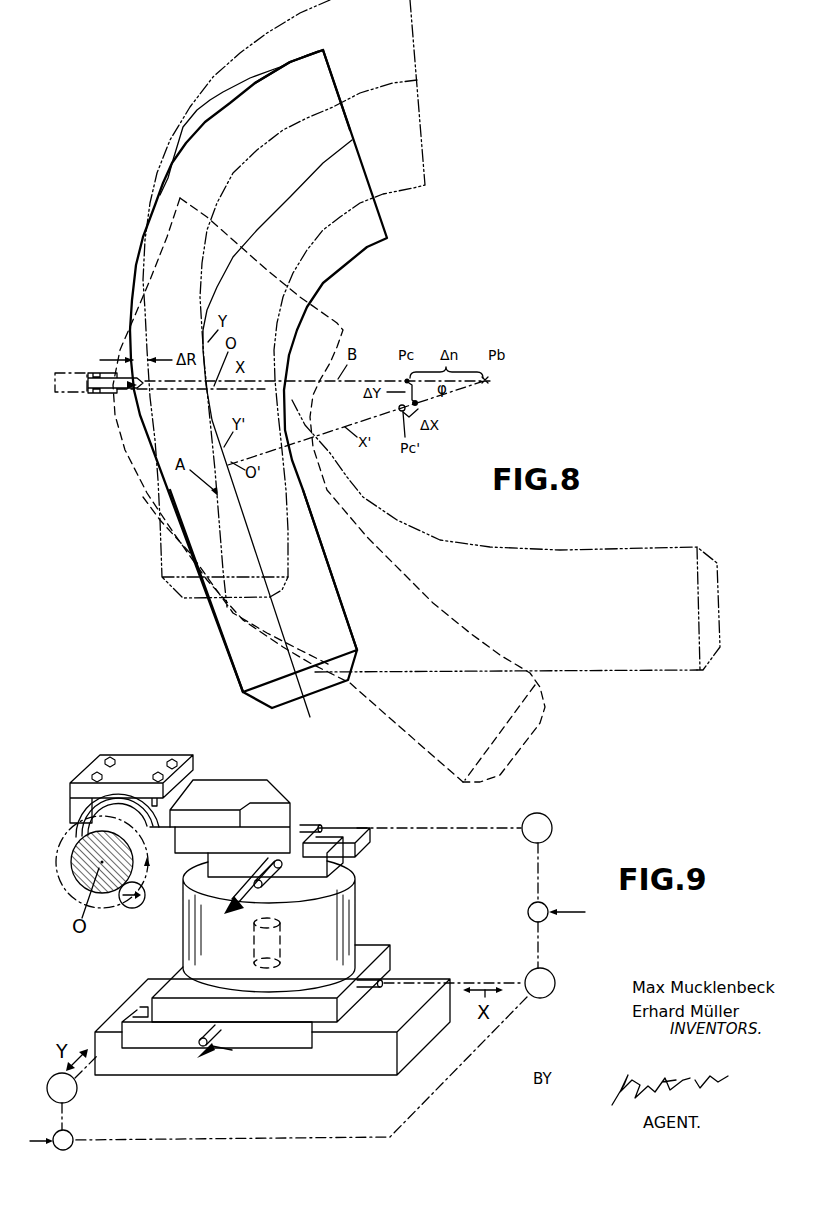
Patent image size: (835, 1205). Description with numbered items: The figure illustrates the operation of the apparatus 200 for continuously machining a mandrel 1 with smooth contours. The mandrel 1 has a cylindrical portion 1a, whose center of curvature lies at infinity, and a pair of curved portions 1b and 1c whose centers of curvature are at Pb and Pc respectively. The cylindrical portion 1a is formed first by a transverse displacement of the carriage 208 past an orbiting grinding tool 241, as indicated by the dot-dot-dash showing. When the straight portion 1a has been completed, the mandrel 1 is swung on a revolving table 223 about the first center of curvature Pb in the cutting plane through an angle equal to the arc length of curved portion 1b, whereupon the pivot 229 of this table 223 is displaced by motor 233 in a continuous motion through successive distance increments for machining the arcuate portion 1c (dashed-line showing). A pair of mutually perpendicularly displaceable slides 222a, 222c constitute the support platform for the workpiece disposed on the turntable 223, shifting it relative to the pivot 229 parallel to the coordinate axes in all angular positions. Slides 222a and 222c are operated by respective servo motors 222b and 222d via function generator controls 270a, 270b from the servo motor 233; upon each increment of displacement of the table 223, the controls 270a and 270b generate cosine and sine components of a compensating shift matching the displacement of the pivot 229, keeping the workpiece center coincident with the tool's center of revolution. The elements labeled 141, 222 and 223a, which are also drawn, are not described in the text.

In FIG. 8, the mandrel 1 is at (368, 252).
In FIG. 9, the mandrel 1 is at (69, 866).
In FIG. 8, the cylindrical portion 1a is at (234, 663).
In FIG. 8, the curved portion 1b is at (204, 112).
In FIG. 8, the curved portion 1c is at (303, 63).
In FIG. 8, the probe 141 is at (117, 393).
In FIG. 9, the apparatus 200 is at (251, 770).
In FIG. 9, the orbiting grinding tool 241 is at (130, 908).
In FIG. 9, the slide 222a is at (295, 800).
In FIG. 9, the pin 222 is at (346, 822).
In FIG. 9, the slide 222c is at (357, 842).
In FIG. 9, the revolving table 223 is at (352, 920).
In FIG. 9, the pivot 229 is at (258, 961).
In FIG. 9, the slide plate 223a is at (388, 957).
In FIG. 9, the carriage 208 is at (270, 1040).
In FIG. 9, the servo motor 222b is at (548, 818).
In FIG. 9, the function generator control 270a is at (547, 906).
In FIG. 9, the motor 233 is at (556, 982).
In FIG. 9, the servo motor 222d is at (76, 1091).
In FIG. 9, the function generator control 270b is at (72, 1131).